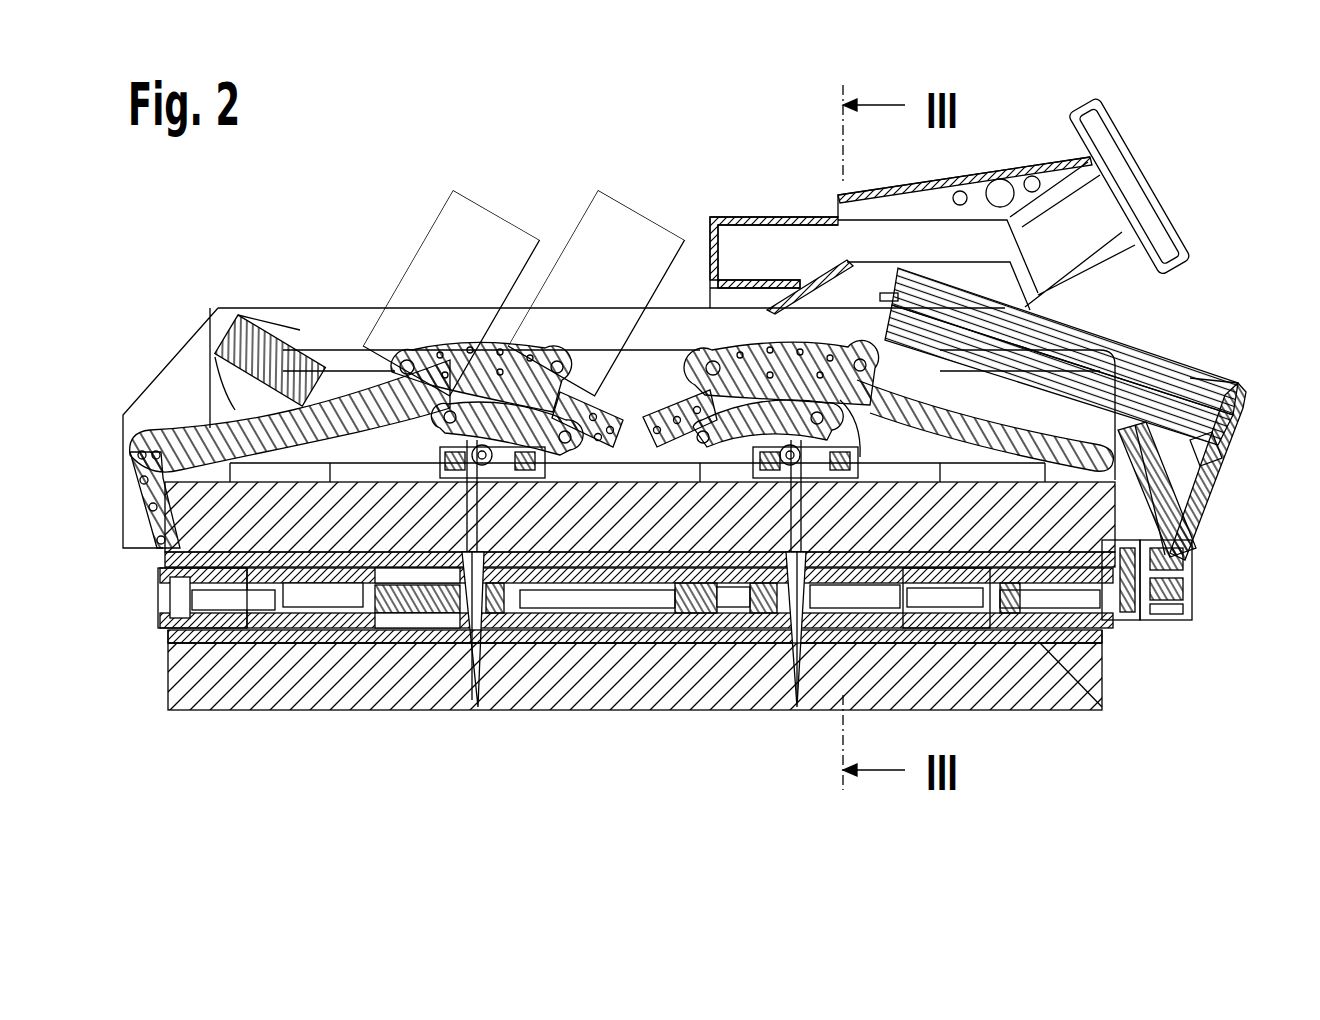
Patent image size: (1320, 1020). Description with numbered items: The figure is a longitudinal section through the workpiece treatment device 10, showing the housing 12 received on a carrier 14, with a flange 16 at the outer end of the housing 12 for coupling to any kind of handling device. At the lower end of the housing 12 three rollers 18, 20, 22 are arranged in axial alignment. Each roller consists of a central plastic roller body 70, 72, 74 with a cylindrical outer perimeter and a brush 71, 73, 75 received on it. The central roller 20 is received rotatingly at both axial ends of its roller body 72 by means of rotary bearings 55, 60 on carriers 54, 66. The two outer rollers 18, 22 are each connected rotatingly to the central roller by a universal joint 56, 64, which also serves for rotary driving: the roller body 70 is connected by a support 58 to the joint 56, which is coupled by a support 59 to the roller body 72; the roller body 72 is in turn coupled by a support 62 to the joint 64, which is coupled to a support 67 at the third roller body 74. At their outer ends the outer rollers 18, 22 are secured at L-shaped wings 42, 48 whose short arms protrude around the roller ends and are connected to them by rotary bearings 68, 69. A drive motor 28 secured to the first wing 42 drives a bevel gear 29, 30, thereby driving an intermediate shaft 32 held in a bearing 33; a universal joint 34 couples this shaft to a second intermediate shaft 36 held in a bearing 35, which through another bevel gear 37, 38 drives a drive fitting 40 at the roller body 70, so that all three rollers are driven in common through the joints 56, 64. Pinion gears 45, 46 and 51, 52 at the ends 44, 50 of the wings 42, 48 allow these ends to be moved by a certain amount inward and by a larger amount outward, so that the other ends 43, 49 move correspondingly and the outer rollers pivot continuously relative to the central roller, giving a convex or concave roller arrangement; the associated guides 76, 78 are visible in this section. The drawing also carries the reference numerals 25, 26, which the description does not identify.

The device 10 is at (356, 132).
The housing 12 is at (312, 338).
The carrier 14 is at (784, 218).
The flange 16 is at (1100, 118).
The roller 18 is at (1055, 728).
The roller 20 is at (600, 735).
The roller 22 is at (300, 735).
The first drive motor 25 is at (472, 222).
The second drive motor 26 is at (620, 222).
The drive motor 28 is at (1148, 382).
The bevel gear 29 is at (1208, 378).
The bevel gear 30 is at (1215, 432).
The intermediate shaft 32 is at (1208, 496).
The bearing 33 is at (1216, 468).
The joint 34 is at (1210, 538).
The bearing 35 is at (1210, 568).
The intermediate shaft 36 is at (1210, 592).
The bevel gear 37 is at (1182, 620).
The bevel gear 38 is at (1150, 620).
The drive fitting 40 is at (1114, 640).
The wing 42 is at (1078, 392).
The end of wing 43 is at (1100, 650).
The end of wing 44 is at (835, 352).
The pinion gear 45 is at (745, 382).
The pinion gear 46 is at (805, 392).
The wing 48 is at (258, 352).
The end of wing 49 is at (138, 550).
The end of wing 50 is at (482, 380).
The pinion gear 51 is at (572, 362).
The pinion gear 52 is at (392, 352).
The carrier 54 is at (862, 460).
The rotary bearing 55 is at (702, 683).
The joint 56 is at (783, 640).
The support 58 is at (818, 650).
The support 59 is at (665, 650).
The rotary bearing 60 is at (533, 683).
The support 62 is at (490, 633).
The joint 64 is at (466, 640).
The carrier 66 is at (400, 456).
The support 67 is at (403, 683).
The rotary bearing 68 is at (1036, 683).
The rotary bearing 69 is at (225, 650).
The roller body 70 is at (898, 645).
The brush 71 is at (997, 650).
The roller body 72 is at (625, 665).
The brush 73 is at (570, 647).
The roller body 74 is at (327, 645).
The brush 75 is at (270, 683).
The guide 76 is at (690, 378).
The guide 78 is at (612, 362).